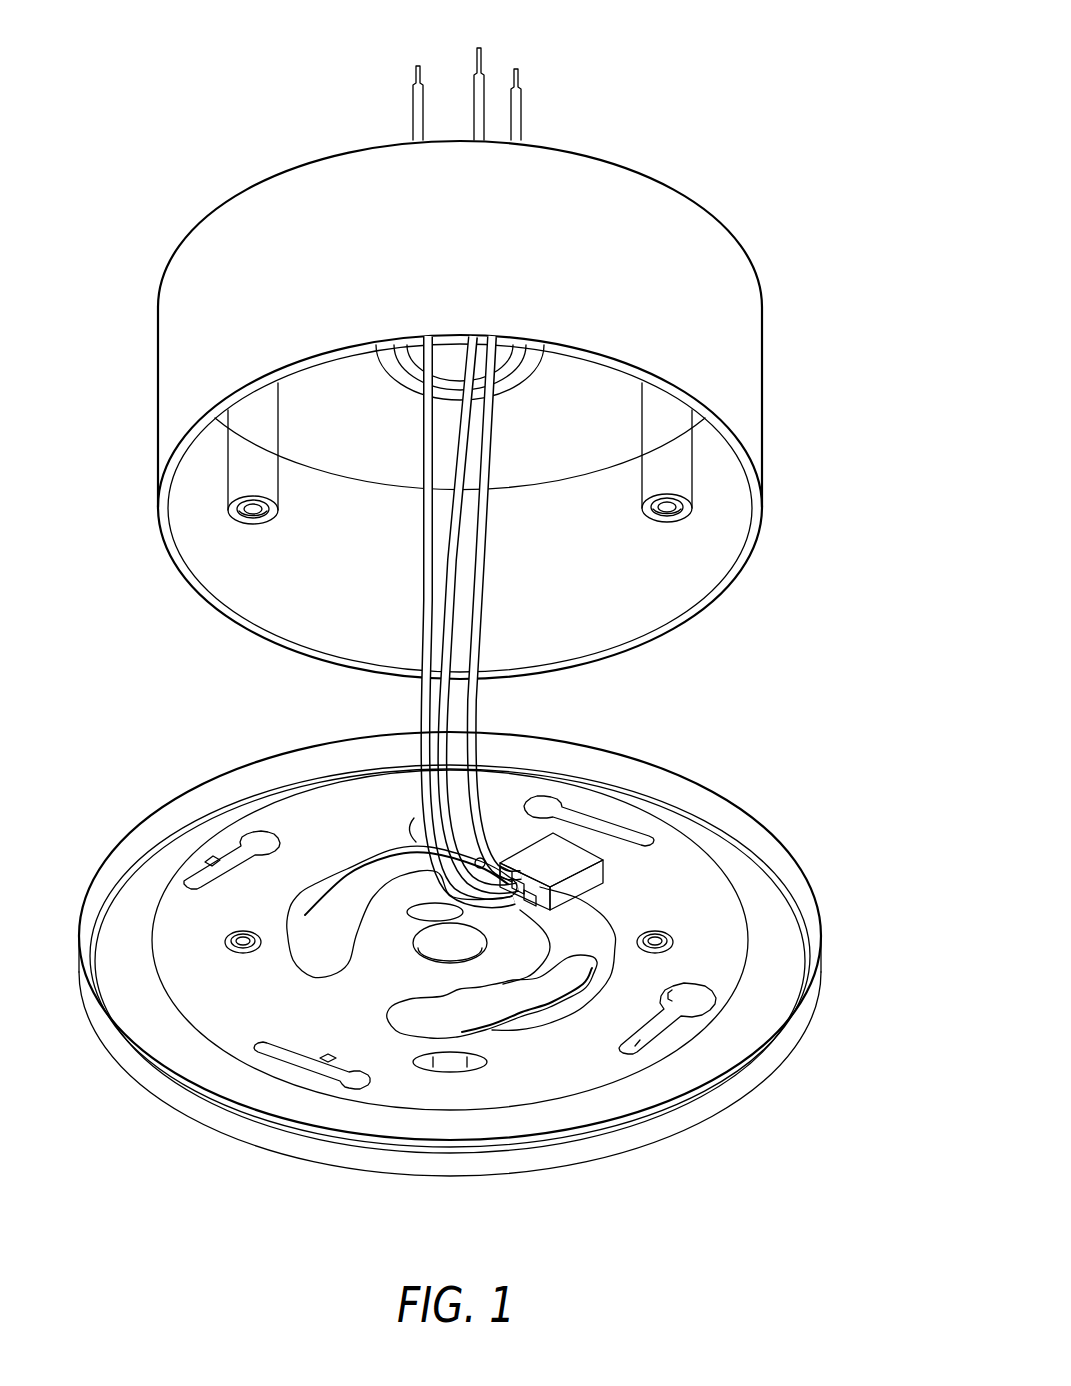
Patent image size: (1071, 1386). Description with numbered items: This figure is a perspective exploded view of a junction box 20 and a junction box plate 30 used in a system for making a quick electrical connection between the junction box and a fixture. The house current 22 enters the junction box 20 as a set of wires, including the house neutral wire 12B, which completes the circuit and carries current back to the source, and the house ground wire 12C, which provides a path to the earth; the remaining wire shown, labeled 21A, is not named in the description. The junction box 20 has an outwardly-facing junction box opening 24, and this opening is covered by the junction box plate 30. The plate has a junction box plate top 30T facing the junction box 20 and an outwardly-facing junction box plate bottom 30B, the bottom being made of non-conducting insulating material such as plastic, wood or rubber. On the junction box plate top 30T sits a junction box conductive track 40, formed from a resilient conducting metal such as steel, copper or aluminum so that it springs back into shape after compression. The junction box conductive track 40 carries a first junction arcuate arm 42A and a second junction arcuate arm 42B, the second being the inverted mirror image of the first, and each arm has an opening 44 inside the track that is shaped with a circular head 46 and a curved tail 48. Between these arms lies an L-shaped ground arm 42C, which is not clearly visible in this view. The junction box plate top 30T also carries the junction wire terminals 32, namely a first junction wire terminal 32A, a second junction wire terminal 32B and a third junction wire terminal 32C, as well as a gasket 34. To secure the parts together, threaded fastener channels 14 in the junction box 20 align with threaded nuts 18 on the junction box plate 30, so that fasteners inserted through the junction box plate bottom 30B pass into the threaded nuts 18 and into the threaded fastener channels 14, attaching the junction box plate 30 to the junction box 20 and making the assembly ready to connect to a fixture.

The house neutral wire 12B is at (519, 101).
The house ground wire 12C is at (484, 88).
The wire 21A is at (413, 97).
The house current 22 is at (581, 100).
The junction box 20 is at (799, 312).
The junction box opening 24 is at (686, 572).
The threaded fastener channels 14 is at (243, 466).
The junction box plate 30 is at (797, 794).
The junction box plate top 30T is at (294, 712).
The junction box plate bottom 30B is at (682, 1158).
The gasket 34 is at (777, 987).
The threaded nuts 18 is at (243, 952).
The junction wire terminals 32 is at (504, 810).
The first junction wire terminal 32A is at (555, 878).
The second junction wire terminal 32B is at (520, 862).
The third junction wire terminal 32C is at (535, 872).
The junction box conductive track 40 is at (634, 903).
The first junction arcuate arm 42A is at (600, 940).
The second junction arcuate arm 42B is at (334, 870).
The ground arm 42C is at (458, 1022).
The opening 44 is at (488, 1037).
The circular head 46 is at (410, 836).
The curved tail 48 is at (278, 838).